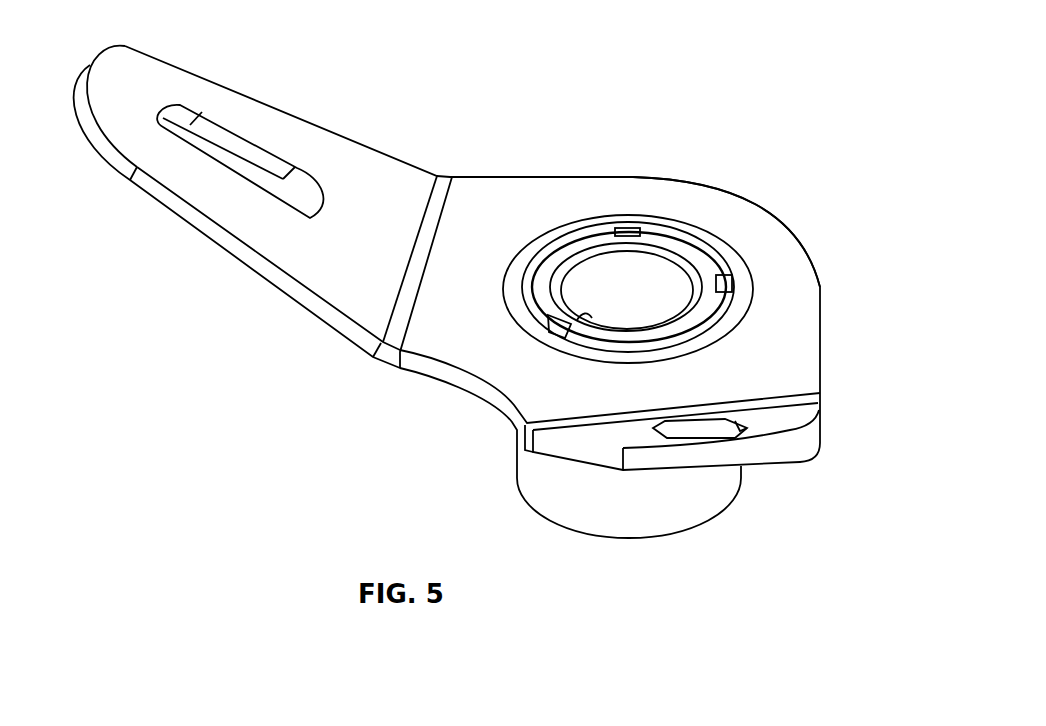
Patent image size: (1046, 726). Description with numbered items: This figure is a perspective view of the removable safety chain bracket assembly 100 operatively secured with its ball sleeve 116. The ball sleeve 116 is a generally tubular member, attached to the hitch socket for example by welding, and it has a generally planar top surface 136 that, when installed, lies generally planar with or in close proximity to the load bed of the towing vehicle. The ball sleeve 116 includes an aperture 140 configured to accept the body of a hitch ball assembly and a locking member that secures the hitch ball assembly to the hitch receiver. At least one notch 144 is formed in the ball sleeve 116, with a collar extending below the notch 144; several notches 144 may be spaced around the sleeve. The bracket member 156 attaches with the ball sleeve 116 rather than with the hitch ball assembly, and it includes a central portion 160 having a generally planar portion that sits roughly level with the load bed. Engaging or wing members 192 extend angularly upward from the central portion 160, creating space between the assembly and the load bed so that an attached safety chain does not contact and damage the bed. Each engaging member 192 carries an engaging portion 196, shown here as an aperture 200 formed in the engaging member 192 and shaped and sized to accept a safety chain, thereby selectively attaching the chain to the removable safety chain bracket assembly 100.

The removable safety chain bracket assembly 100 is at (773, 195).
The ball sleeve 116 is at (572, 517).
The top surface 136 is at (677, 240).
The aperture 140 is at (590, 250).
The notch 144 is at (628, 226).
The bracket member 156 is at (490, 193).
The central portion 160 is at (602, 193).
The engaging member 192 is at (167, 77).
The engaging portion 196 is at (268, 152).
The aperture 200 is at (222, 180).